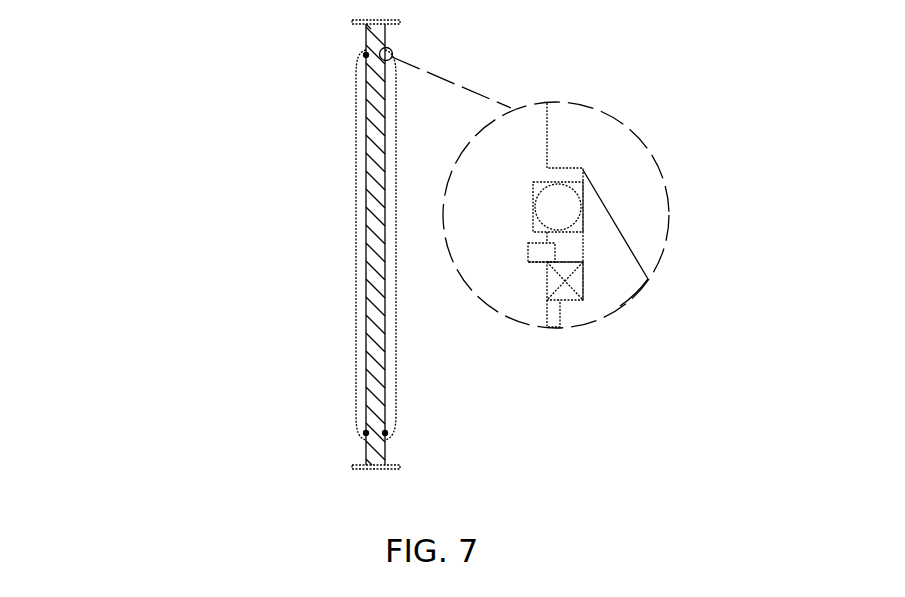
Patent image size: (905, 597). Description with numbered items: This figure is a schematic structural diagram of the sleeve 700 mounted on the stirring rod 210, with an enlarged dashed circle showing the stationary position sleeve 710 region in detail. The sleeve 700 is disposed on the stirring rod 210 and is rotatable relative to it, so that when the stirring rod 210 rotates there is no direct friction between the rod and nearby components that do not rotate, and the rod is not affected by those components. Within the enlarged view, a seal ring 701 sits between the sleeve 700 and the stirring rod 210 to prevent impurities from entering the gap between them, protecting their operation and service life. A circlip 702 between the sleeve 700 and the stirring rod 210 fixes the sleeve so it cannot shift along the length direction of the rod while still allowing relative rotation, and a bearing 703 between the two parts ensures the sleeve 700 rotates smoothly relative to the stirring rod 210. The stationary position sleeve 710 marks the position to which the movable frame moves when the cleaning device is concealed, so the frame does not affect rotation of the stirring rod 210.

The sleeve 700 is at (130, 122).
The stirring rod 210 is at (513, 153).
The seal ring 701 is at (571, 200).
The circlip 702 is at (537, 262).
The bearing 703 is at (577, 293).
The stationary position sleeve 710 is at (612, 255).